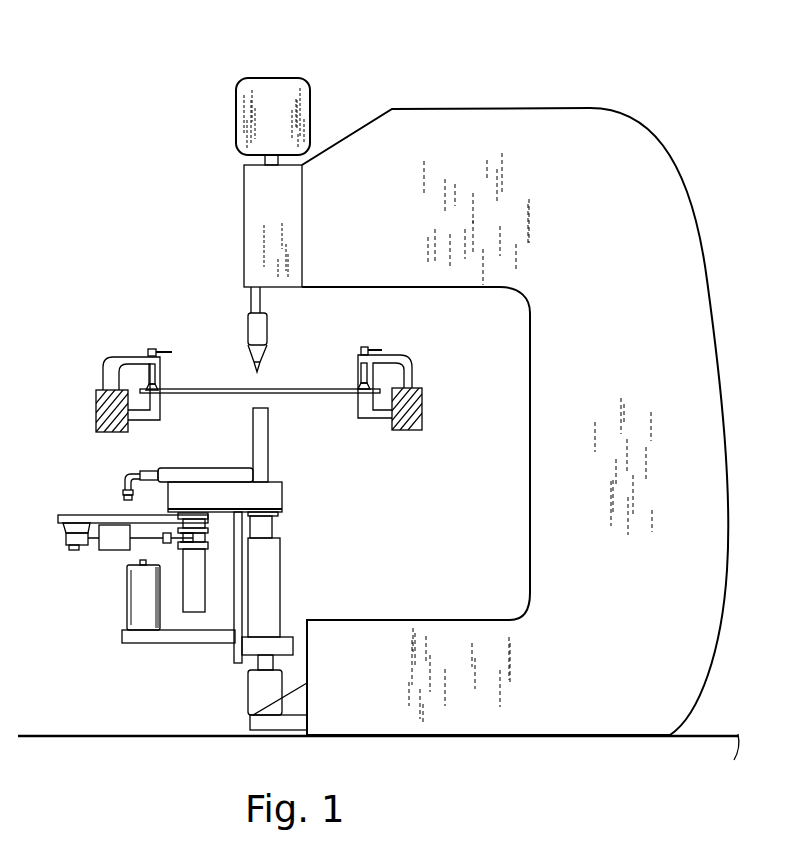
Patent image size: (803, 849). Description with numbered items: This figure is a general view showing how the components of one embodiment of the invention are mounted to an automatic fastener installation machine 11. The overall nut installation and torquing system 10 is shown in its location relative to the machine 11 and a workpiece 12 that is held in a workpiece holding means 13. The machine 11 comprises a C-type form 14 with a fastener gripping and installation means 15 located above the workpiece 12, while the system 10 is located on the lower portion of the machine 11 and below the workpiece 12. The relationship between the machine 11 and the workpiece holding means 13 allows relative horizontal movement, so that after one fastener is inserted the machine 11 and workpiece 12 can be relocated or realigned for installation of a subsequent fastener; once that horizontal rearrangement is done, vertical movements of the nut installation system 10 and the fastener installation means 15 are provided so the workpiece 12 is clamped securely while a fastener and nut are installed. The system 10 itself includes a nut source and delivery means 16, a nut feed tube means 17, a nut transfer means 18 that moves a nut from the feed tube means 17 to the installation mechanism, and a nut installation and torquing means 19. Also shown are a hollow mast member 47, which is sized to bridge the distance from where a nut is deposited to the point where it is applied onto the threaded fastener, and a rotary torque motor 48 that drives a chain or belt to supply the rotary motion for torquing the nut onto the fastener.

The nut installation and torquing system 10 is at (113, 617).
The automatic fastener installation machine 11 is at (421, 81).
The workpiece 12 is at (333, 389).
The workpiece holding means 13 is at (84, 417).
The C-type form 14 is at (604, 364).
The fastener gripping and installation means 15 is at (248, 330).
The nut source and delivery means 16 is at (140, 643).
The nut feed tube means 17 is at (233, 605).
The nut transfer means 18 is at (212, 467).
The nut installation and torquing means 19 is at (280, 538).
The hollow mast member 47 is at (270, 428).
The rotary torque motor 48 is at (205, 578).